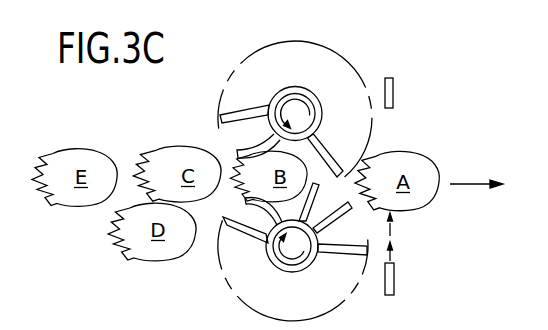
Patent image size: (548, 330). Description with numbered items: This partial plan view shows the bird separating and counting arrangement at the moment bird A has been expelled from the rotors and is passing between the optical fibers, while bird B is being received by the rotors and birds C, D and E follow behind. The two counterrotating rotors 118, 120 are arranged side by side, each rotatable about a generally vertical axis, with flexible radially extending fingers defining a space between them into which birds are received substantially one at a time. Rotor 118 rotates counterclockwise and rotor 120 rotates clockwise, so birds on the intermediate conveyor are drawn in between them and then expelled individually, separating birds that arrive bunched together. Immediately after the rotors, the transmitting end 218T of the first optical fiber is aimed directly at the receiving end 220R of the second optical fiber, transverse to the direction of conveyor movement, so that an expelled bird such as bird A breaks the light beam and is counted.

The counterrotating rotor 118 is at (301, 116).
The counterrotating rotor 120 is at (293, 251).
The receiving end of optical fiber 220R is at (393, 105).
The transmitting end of optical fiber 218T is at (394, 280).